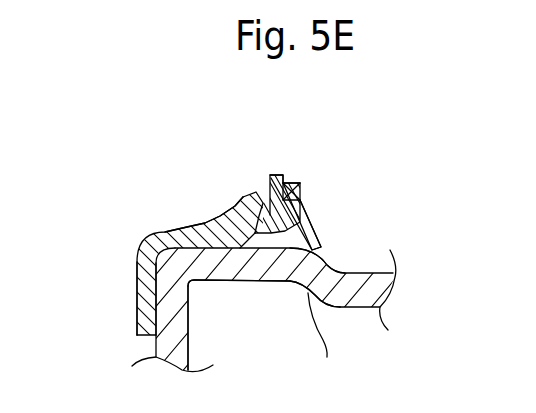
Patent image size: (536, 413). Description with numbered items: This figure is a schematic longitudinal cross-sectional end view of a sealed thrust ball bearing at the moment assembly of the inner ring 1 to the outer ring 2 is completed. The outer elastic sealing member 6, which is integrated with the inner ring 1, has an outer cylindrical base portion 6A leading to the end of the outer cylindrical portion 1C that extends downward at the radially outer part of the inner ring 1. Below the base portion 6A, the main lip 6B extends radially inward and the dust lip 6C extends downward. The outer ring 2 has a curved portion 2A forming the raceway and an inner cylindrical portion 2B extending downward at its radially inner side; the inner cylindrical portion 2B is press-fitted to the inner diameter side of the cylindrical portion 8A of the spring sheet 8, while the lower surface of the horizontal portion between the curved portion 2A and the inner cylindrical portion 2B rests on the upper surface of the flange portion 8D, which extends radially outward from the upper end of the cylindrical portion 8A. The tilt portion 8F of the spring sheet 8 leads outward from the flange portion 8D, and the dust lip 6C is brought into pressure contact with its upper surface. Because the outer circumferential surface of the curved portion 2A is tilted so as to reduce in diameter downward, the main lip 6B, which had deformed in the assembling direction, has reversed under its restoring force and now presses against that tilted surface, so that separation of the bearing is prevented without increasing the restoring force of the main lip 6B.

The inner ring 1 is at (283, 176).
The outer cylindrical portion 1C is at (287, 182).
The outer ring 2 is at (145, 236).
The curved portion 2A is at (213, 230).
The inner cylindrical portion 2B is at (137, 295).
The outer elastic sealing member 6 is at (307, 210).
The outer cylindrical base portion 6A is at (302, 192).
The main lip 6B is at (257, 223).
The dust lip 6C is at (315, 243).
The spring sheet 8 is at (368, 272).
The cylindrical portion 8A is at (175, 343).
The flange portion 8D is at (245, 272).
The tilt portion 8F is at (318, 318).